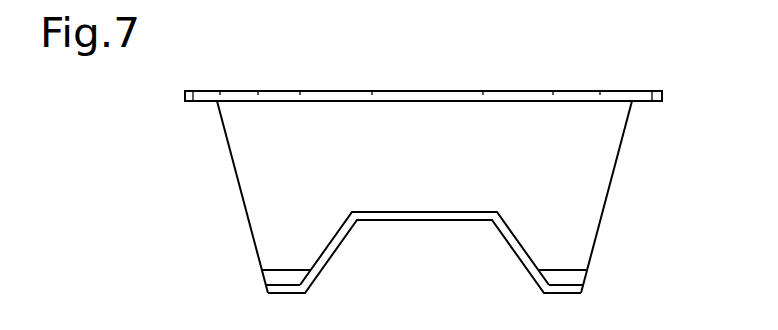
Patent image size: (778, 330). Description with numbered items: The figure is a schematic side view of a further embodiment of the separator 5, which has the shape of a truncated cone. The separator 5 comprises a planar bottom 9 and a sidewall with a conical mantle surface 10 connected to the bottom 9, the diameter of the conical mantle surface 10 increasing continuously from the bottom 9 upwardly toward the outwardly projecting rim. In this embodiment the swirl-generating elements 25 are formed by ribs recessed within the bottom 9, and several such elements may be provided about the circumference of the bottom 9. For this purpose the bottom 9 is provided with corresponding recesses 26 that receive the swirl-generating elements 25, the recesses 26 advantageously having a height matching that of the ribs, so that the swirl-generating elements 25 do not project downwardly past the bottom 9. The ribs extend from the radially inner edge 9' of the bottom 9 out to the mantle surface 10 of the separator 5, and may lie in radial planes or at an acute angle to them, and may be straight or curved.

The separator 5 is at (306, 85).
The conical mantle surface 10 is at (237, 175).
The bottom 9 is at (433, 272).
The radially inner edge of the bottom 9' is at (424, 227).
The swirl-generating elements 25 is at (277, 270).
The recesses 26 is at (562, 270).